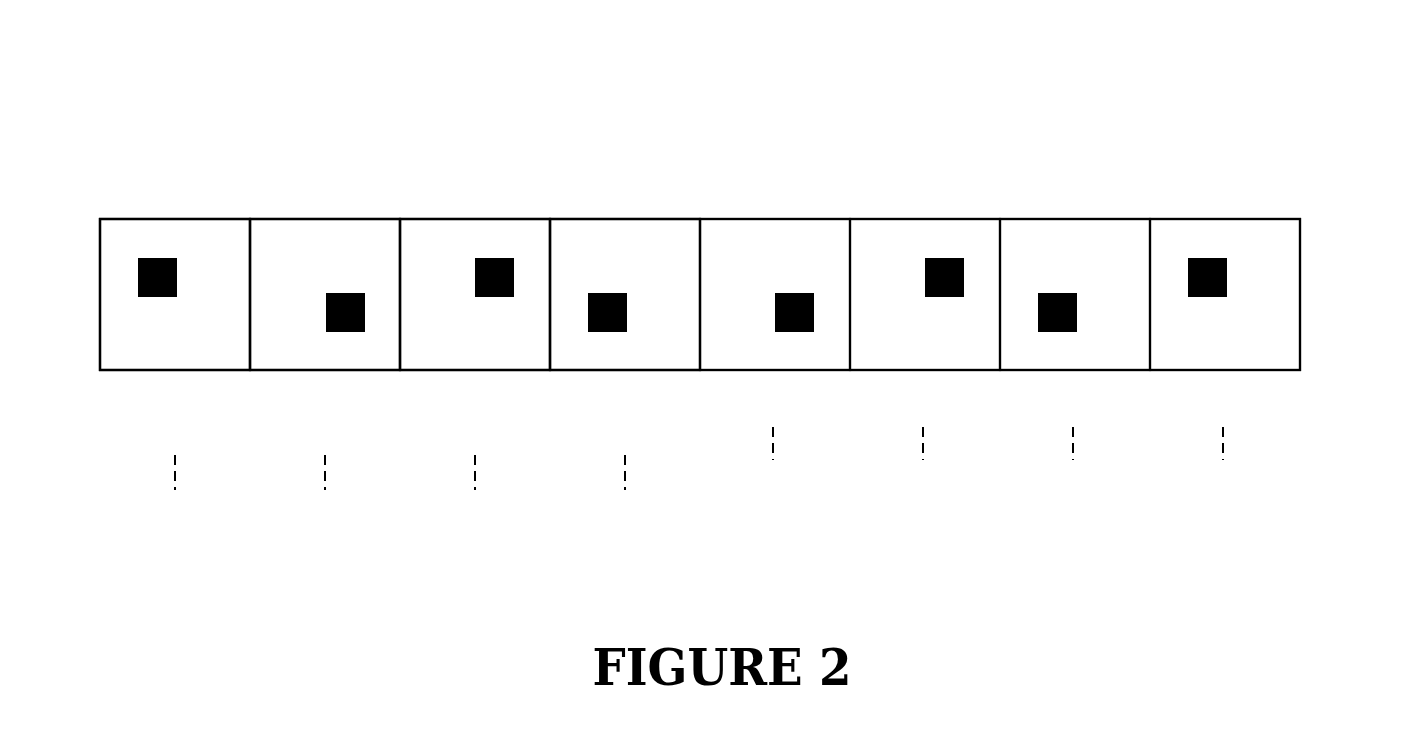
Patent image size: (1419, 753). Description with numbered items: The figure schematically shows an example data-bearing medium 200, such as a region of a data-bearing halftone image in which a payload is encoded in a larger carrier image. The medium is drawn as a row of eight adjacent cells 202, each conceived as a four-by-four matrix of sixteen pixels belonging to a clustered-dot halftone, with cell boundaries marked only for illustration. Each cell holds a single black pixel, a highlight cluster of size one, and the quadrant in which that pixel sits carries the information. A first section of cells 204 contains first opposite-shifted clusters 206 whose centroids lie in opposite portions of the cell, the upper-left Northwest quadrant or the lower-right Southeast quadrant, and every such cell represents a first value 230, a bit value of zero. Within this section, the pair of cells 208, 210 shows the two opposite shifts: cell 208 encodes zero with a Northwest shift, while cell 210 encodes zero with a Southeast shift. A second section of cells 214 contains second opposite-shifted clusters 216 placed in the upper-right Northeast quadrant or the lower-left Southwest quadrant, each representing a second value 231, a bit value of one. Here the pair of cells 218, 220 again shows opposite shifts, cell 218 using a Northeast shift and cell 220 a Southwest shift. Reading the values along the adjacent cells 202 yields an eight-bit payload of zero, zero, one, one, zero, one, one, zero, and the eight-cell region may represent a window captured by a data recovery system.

The data-bearing medium 200 is at (1220, 80).
The cells 202 is at (1275, 215).
The first section of cells 204 is at (119, 218).
The first opposite-shifted clusters 206 is at (168, 258).
The cell 208 is at (178, 370).
The cell 210 is at (328, 370).
The second section of cells 214 is at (420, 218).
The second opposite-shifted clusters 216 is at (508, 258).
The cell 218 is at (478, 370).
The cell 220 is at (628, 370).
The first value 230 is at (178, 530).
The second value 231 is at (478, 530).